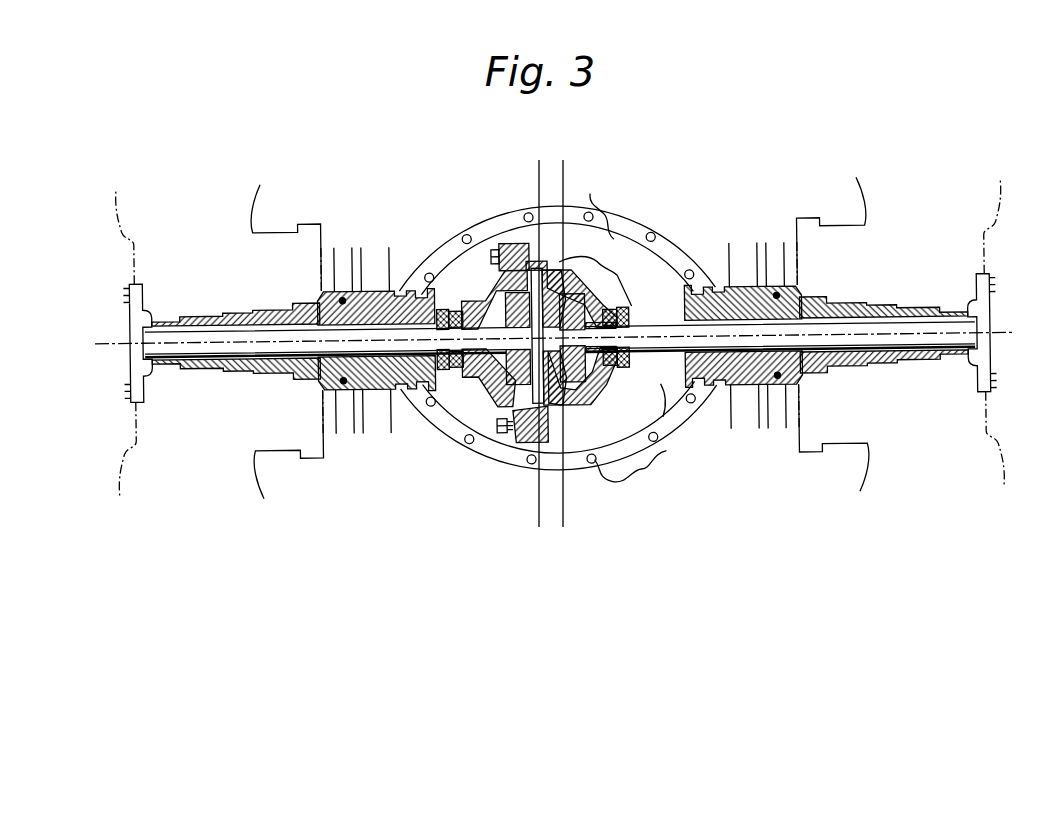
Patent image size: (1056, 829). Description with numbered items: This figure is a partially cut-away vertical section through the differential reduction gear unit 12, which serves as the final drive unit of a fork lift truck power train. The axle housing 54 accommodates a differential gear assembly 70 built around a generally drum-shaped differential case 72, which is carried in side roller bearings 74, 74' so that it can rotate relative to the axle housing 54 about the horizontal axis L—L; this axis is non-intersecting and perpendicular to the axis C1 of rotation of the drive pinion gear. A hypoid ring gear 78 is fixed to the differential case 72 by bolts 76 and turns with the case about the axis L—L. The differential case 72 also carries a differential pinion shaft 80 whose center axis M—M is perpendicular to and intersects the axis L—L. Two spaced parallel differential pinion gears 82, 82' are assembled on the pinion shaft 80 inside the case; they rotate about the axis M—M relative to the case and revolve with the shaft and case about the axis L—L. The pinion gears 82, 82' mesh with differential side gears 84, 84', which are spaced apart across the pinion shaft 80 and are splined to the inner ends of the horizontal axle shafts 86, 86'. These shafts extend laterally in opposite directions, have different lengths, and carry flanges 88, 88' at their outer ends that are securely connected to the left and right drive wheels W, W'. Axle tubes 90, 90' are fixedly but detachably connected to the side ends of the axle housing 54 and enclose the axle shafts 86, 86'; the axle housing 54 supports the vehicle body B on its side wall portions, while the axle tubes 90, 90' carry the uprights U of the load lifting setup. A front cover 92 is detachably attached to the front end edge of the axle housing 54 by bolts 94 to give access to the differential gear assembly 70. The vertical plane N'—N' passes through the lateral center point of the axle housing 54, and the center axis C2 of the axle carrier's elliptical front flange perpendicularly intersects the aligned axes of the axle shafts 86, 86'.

The differential reduction gear unit 12 is at (622, 240).
The axle housing 54 is at (670, 243).
The differential gear assembly 70 is at (426, 285).
The differential case 72 is at (484, 425).
The side roller bearing 74 is at (433, 386).
The side roller bearing 74' is at (647, 361).
The bolts 76 is at (500, 248).
The hypoid ring gear 78 is at (533, 445).
The differential pinion shaft 80 is at (556, 392).
The differential pinion gear 82 is at (550, 308).
The differential pinion gear 82' is at (594, 354).
The differential side gear 84 is at (458, 277).
The differential side gear 84' is at (597, 310).
The axle shaft 86 is at (235, 301).
The axle shaft 86' is at (883, 289).
The flange 88 is at (161, 340).
The flange 88' is at (965, 326).
The axle tube 90 is at (236, 389).
The axle tube 90' is at (884, 381).
The front cover 92 is at (663, 410).
The bolts 94 is at (604, 212).
The axis of rotation of the drive pinion gear C1 is at (582, 388).
The center axis of the elliptical front flange portion C2 is at (600, 334).
The drive wheel W is at (220, 342).
The drive wheel W' is at (900, 333).
The uprights U is at (342, 255).
The vehicle body B is at (380, 255).
The horizontal axis L- L is at (556, 340).
The center axis M- M is at (537, 345).
The vertical plane N'- N' is at (566, 345).